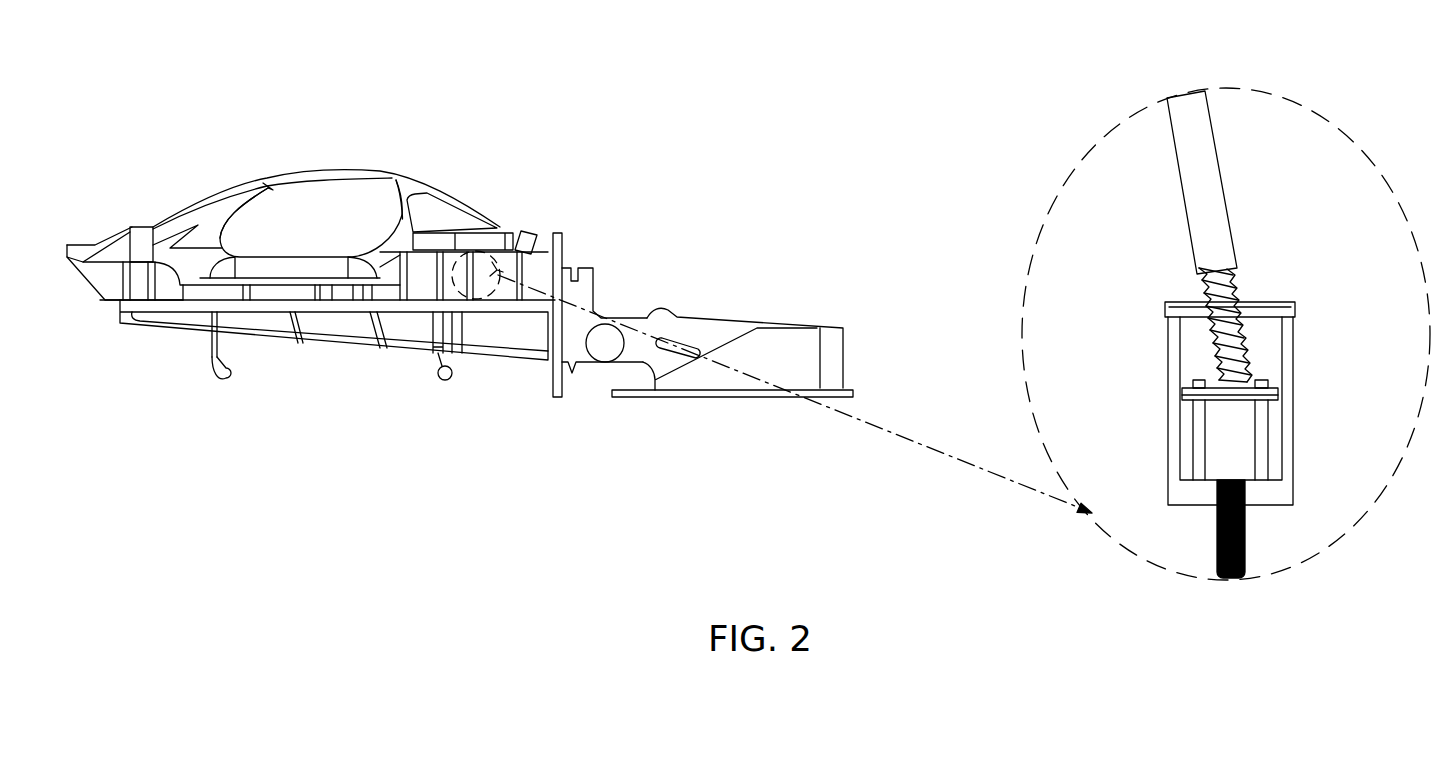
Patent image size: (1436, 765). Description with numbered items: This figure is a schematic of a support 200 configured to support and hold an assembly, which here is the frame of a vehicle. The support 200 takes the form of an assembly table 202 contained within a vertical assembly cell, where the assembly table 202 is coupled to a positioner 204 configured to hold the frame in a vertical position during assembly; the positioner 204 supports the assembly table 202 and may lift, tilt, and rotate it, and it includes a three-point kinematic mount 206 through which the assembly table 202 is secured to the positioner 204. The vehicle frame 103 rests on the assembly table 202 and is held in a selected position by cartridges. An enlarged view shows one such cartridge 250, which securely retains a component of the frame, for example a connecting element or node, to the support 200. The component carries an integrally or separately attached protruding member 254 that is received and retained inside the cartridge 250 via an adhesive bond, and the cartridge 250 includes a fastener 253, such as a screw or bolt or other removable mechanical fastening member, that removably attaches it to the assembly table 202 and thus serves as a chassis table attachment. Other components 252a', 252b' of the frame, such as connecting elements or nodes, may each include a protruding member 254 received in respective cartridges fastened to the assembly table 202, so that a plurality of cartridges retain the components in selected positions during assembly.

The vehicle body 103 is at (173, 227).
The support 200 is at (309, 372).
The assembly table 202 is at (252, 312).
The positioner 204 is at (665, 287).
The 3-point kinematic mount 206 is at (582, 292).
The cartridge 250 is at (1077, 136).
The component 252a' is at (266, 201).
The component 252b' is at (391, 204).
The fastener 253 is at (1218, 565).
The protruding member 254 is at (1246, 347).